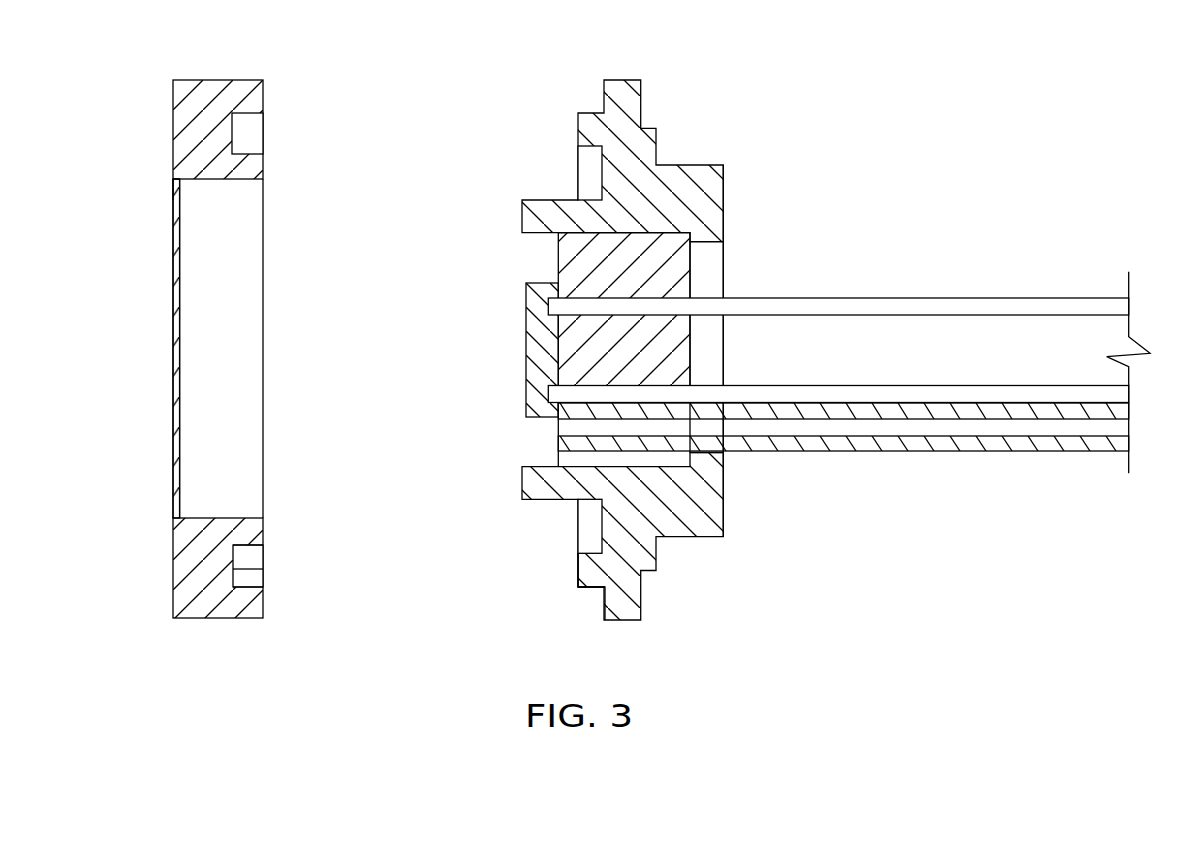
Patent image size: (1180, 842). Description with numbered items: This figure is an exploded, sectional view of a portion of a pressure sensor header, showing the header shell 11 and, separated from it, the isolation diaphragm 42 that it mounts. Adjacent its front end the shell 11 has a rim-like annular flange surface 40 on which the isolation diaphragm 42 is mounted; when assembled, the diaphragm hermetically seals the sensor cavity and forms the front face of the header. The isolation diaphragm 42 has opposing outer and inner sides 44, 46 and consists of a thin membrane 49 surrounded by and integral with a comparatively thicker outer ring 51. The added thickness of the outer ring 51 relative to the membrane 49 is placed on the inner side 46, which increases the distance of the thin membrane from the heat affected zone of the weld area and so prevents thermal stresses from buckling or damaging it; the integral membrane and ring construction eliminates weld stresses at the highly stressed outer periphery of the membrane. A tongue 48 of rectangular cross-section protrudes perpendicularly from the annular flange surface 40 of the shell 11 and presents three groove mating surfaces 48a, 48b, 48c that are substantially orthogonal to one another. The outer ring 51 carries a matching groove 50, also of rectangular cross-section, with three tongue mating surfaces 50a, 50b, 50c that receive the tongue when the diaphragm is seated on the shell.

The shell 11 is at (724, 498).
The annular flange surface 40 is at (627, 374).
The isolation diaphragm 42 is at (173, 393).
The outer side 44 is at (173, 225).
The inner side 46 is at (181, 273).
The tongue 48 is at (541, 570).
The groove mating surface 48a is at (589, 549).
The groove mating surface 48b is at (578, 568).
The groove mating surface 48c is at (605, 606).
The thin membrane 49 is at (173, 188).
The groove 50 is at (277, 570).
The tongue mating surface 50a is at (248, 548).
The tongue mating surface 50b is at (252, 570).
The tongue mating surface 50c is at (252, 587).
The outer ring 51 is at (218, 92).